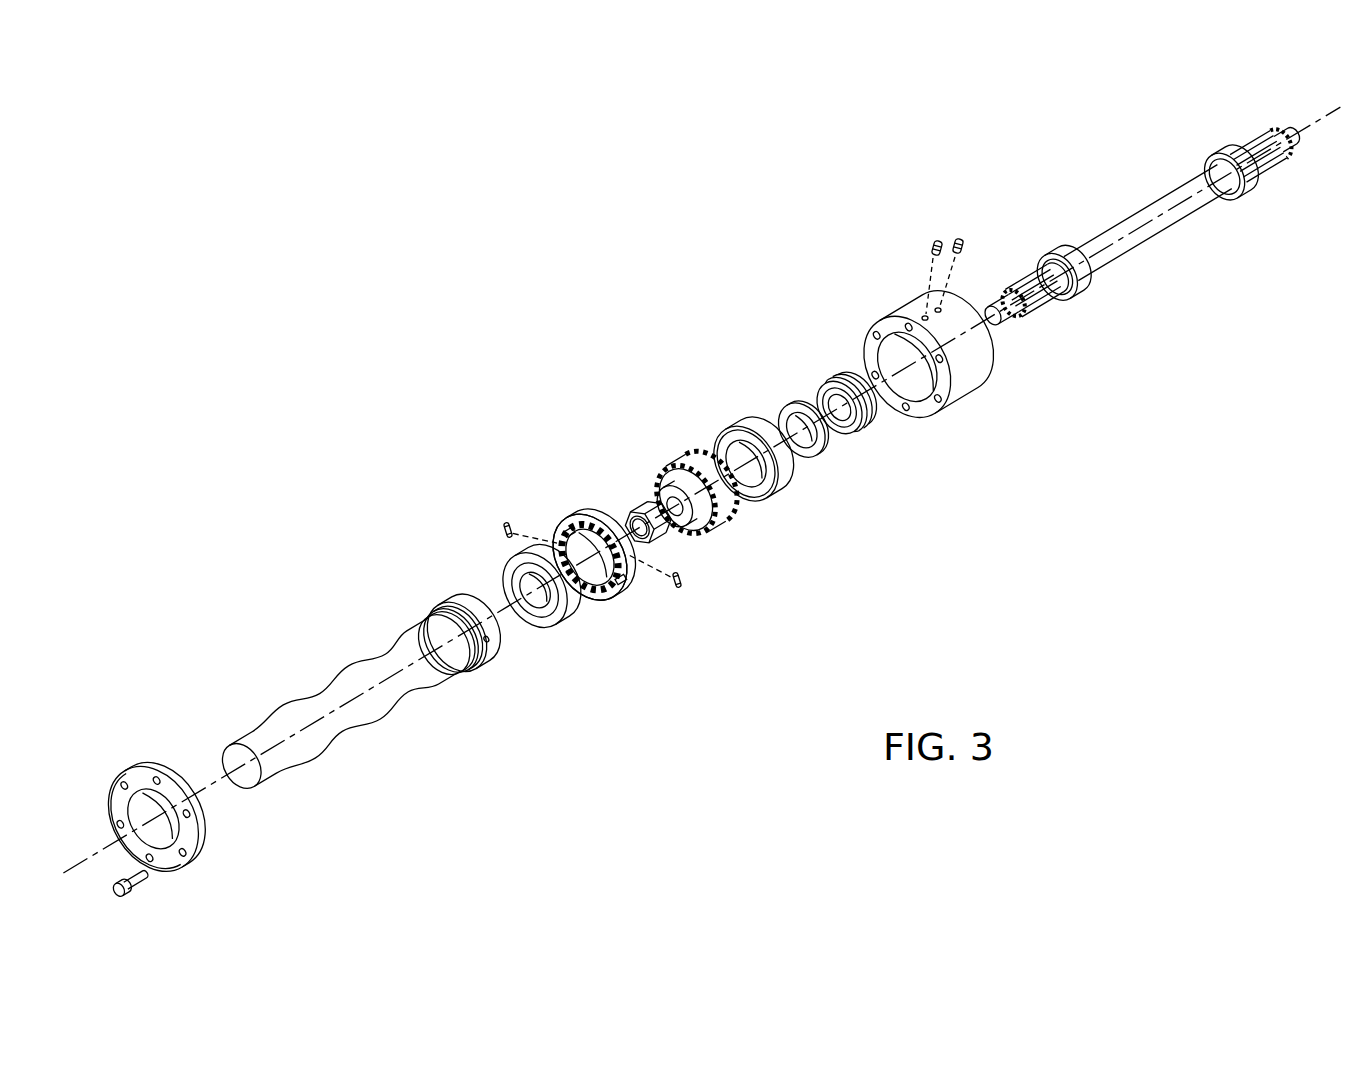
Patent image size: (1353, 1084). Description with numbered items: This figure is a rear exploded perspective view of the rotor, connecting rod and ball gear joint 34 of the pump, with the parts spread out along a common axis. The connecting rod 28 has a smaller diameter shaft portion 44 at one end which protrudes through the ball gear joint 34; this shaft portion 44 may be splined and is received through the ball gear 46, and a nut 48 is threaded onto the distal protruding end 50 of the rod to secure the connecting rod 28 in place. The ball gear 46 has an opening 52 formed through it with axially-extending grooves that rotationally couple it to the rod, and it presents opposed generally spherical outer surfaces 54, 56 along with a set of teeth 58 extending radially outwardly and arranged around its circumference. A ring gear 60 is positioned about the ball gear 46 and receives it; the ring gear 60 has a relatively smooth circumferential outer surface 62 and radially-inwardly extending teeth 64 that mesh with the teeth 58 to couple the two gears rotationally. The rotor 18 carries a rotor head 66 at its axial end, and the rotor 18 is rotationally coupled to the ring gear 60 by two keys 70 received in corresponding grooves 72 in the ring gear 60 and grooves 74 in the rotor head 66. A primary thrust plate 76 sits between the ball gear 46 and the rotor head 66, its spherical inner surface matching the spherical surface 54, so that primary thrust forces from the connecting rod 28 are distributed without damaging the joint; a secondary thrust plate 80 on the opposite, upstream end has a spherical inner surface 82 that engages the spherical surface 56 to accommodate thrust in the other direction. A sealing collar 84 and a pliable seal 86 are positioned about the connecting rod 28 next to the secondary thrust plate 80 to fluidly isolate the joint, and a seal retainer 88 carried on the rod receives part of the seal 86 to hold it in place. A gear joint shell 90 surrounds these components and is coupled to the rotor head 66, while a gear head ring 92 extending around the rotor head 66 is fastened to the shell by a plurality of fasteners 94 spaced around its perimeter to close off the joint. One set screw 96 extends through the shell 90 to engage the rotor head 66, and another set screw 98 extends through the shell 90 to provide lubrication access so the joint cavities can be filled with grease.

The rotor 18 is at (347, 667).
The connecting rod 28 is at (1116, 226).
The ball gear joint 34 is at (716, 652).
The shaft portion 44 is at (1022, 277).
The ball gear 46 is at (696, 452).
The nut 48 is at (633, 508).
The distal/protruding end 50 is at (1010, 310).
The opening 52 is at (658, 522).
The spherical outer surface 54 is at (672, 482).
The spherical outer surface 56 is at (722, 495).
The teeth 58 is at (694, 458).
The ring gear 60 is at (591, 524).
The circumferential outer surface 62 is at (594, 512).
The teeth 64 is at (598, 590).
The rotor head 66 is at (463, 597).
The keys 70 is at (500, 528).
The grooves 72 is at (560, 543).
The grooves 74 is at (490, 650).
The primary thrust plate 76 is at (563, 612).
The secondary thrust plate 80 is at (746, 425).
The spherical inner surface 82 is at (762, 476).
The sealing collar 84 is at (818, 447).
The pliable seal 86 is at (868, 420).
The seal retainer 88 is at (1080, 284).
The gear joint shell 90 is at (886, 285).
The gear head ring 92 is at (140, 755).
The fasteners 94 is at (147, 888).
The set screw 96 is at (935, 240).
The set screw 98 is at (961, 238).